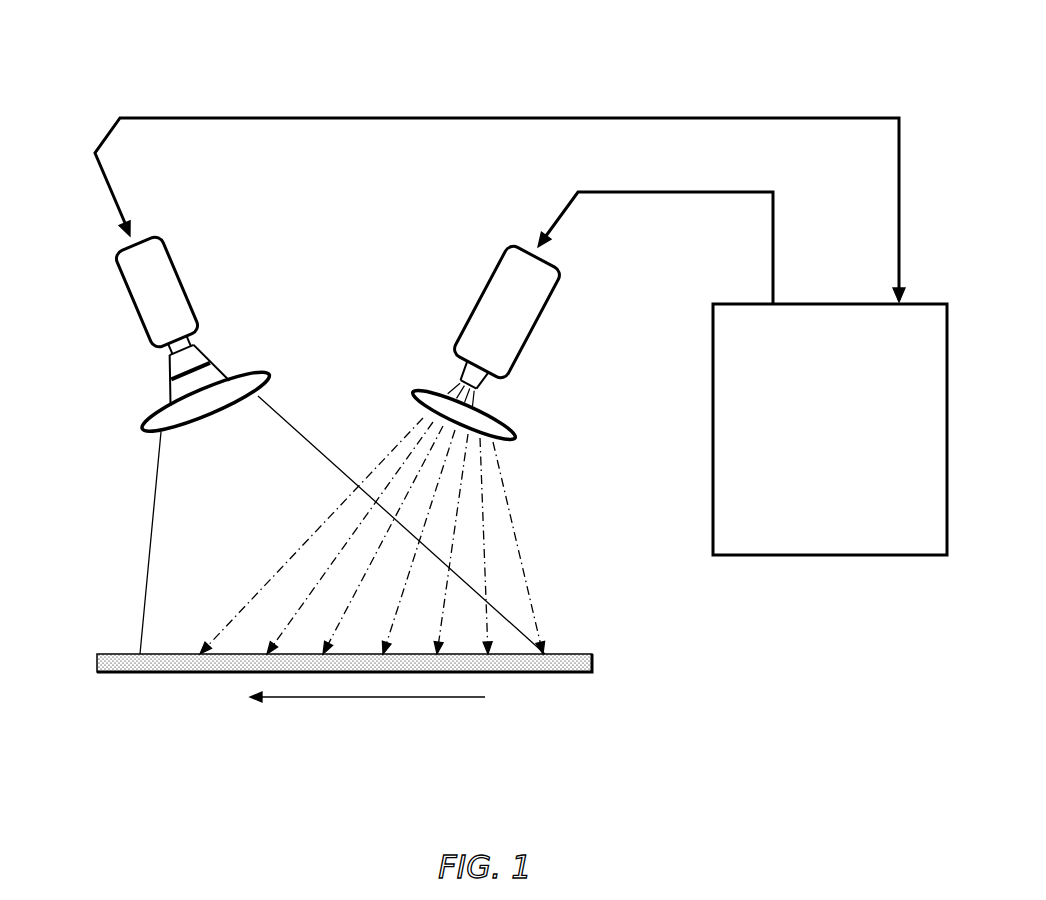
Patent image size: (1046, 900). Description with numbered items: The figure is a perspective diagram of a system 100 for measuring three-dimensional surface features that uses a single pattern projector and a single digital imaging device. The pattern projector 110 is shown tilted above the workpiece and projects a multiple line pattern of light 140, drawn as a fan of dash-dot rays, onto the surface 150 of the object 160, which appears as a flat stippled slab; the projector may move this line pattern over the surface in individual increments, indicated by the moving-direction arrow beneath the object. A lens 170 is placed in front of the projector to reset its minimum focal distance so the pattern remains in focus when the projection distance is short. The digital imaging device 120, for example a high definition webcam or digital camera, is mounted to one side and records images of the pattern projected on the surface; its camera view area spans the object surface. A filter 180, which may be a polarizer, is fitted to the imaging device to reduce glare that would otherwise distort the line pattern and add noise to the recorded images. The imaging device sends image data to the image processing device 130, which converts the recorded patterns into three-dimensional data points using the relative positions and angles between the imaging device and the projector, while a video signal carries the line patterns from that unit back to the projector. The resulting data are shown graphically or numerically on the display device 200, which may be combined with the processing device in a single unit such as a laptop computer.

The system for measuring surface features 100 is at (364, 72).
The pattern projector 110 is at (538, 320).
The digital imaging device 120 is at (215, 283).
The image processing device 130 is at (830, 429).
The pattern of light 140 is at (522, 557).
The surface 150 is at (165, 654).
The object 160 is at (596, 661).
The lens 170 is at (412, 393).
The filter 180 is at (145, 428).
The display device 200 is at (830, 429).